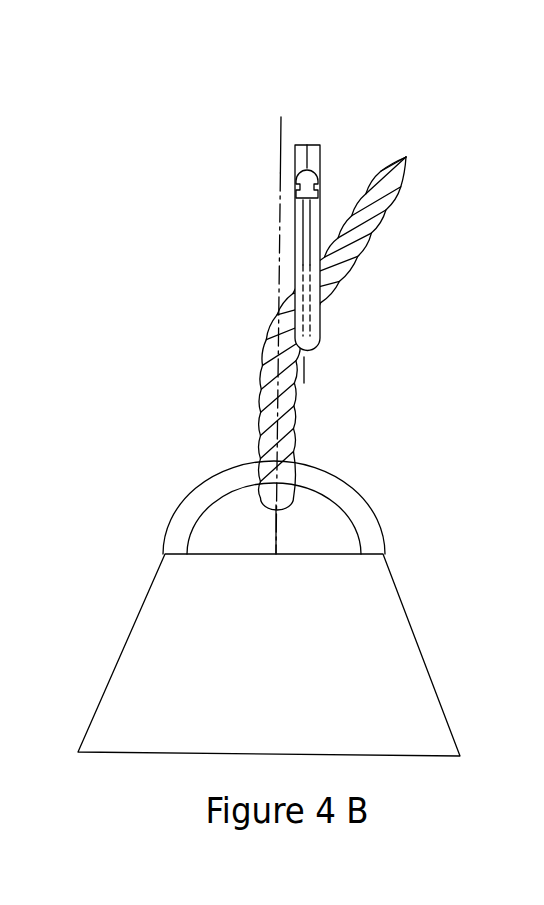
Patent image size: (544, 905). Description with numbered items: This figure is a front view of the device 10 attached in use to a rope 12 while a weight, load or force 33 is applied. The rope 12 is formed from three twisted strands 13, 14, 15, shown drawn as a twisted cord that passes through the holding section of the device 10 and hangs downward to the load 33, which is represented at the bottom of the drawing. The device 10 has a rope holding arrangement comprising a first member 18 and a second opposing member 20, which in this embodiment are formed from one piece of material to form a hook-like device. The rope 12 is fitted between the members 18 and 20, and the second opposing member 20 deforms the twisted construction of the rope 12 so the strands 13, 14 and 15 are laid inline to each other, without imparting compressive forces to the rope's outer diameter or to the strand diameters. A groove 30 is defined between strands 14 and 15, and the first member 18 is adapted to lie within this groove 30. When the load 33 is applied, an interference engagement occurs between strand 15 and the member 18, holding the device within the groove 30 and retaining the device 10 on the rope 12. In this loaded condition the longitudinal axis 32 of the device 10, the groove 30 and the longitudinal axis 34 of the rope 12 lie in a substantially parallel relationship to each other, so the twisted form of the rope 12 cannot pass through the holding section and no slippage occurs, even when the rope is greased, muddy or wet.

The device 10 is at (230, 195).
The rope 12 is at (407, 190).
The strand 13 is at (348, 277).
The strand 14 is at (362, 250).
The strand 15 is at (337, 303).
The first member 18 is at (320, 145).
The second opposing member 20 is at (323, 213).
The groove 30 is at (368, 233).
The axis of the device 32 is at (307, 145).
The weight, load or force 33 is at (122, 652).
The axis of the rope 34 is at (281, 117).